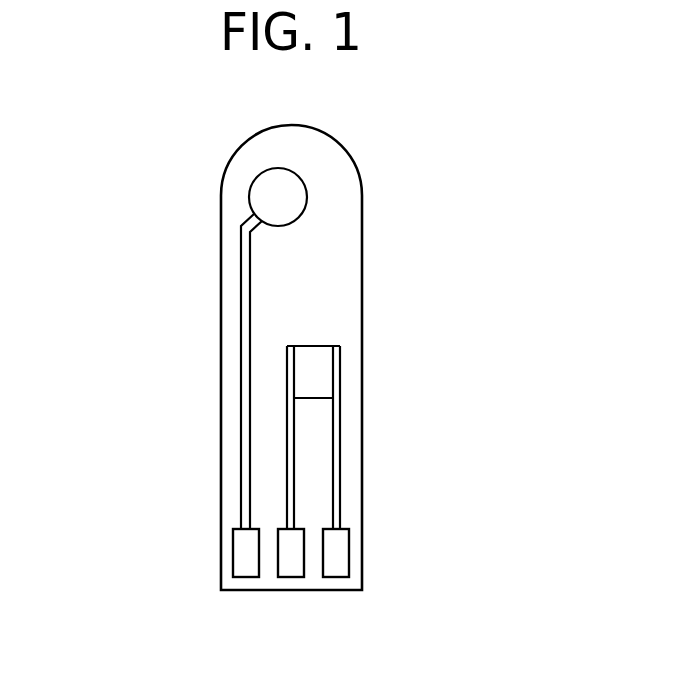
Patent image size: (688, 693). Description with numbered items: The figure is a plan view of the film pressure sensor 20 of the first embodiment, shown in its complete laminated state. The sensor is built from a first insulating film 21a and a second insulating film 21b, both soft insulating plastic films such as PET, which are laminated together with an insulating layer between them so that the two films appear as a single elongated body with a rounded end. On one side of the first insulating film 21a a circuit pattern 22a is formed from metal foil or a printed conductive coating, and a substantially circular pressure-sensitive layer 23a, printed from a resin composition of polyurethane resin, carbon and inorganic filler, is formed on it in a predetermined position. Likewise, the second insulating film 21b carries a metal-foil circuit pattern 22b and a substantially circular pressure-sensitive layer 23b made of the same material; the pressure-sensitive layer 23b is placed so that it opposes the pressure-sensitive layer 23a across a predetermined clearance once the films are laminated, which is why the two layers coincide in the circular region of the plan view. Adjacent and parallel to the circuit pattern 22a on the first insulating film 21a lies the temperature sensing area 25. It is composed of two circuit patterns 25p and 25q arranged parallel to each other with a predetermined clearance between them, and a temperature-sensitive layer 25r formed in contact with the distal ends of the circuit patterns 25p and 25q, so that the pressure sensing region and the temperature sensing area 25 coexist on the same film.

The film pressure sensor 20 is at (298, 357).
The first insulating film 21a is at (383, 357).
The second insulating film 21b is at (340, 313).
The circuit pattern 22a is at (152, 395).
The circuit pattern 22b is at (241, 304).
The pressure-sensitive layer 23a is at (191, 196).
The pressure-sensitive layer 23b is at (263, 193).
The temperature sensing area 25 is at (369, 383).
The circuit pattern 25p is at (293, 483).
The circuit pattern 25q is at (340, 438).
The temperature-sensitive layer 25r is at (303, 343).